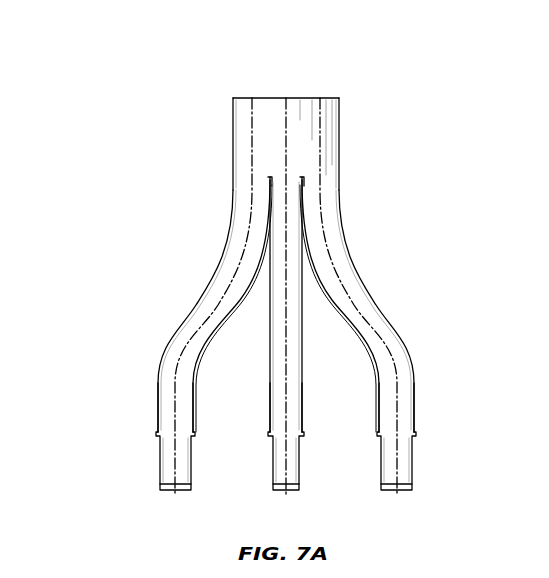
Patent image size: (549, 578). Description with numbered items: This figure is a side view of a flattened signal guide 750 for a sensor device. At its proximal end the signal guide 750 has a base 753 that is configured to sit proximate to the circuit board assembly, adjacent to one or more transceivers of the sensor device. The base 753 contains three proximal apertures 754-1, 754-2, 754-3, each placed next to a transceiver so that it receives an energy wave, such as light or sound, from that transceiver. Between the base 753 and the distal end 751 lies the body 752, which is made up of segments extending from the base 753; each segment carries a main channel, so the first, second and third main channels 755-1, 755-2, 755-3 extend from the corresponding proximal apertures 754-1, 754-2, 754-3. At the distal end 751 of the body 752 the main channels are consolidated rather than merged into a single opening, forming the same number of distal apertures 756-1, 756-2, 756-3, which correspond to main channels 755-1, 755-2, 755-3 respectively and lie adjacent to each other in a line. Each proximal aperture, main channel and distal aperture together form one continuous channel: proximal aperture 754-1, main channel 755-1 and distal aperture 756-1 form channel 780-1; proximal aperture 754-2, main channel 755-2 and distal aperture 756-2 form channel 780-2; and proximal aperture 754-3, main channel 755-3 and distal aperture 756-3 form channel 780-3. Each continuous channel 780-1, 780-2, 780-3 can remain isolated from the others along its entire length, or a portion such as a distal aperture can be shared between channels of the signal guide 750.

The signal guide 750 is at (154, 49).
The distal end 751 is at (211, 111).
The body 752 is at (145, 290).
The base 753 is at (145, 488).
The first proximal aperture 754-1 is at (175, 490).
The second proximal aperture 754-2 is at (287, 490).
The third proximal aperture 754-3 is at (403, 490).
The first main channel 755-1 is at (212, 338).
The second main channel 755-2 is at (300, 365).
The third main channel 755-3 is at (403, 363).
The first distal aperture 756-1 is at (252, 98).
The second distal aperture 756-2 is at (286, 98).
The third distal aperture 756-3 is at (321, 98).
The first channel 780-1 is at (173, 422).
The second channel 780-2 is at (290, 400).
The third channel 780-3 is at (398, 422).